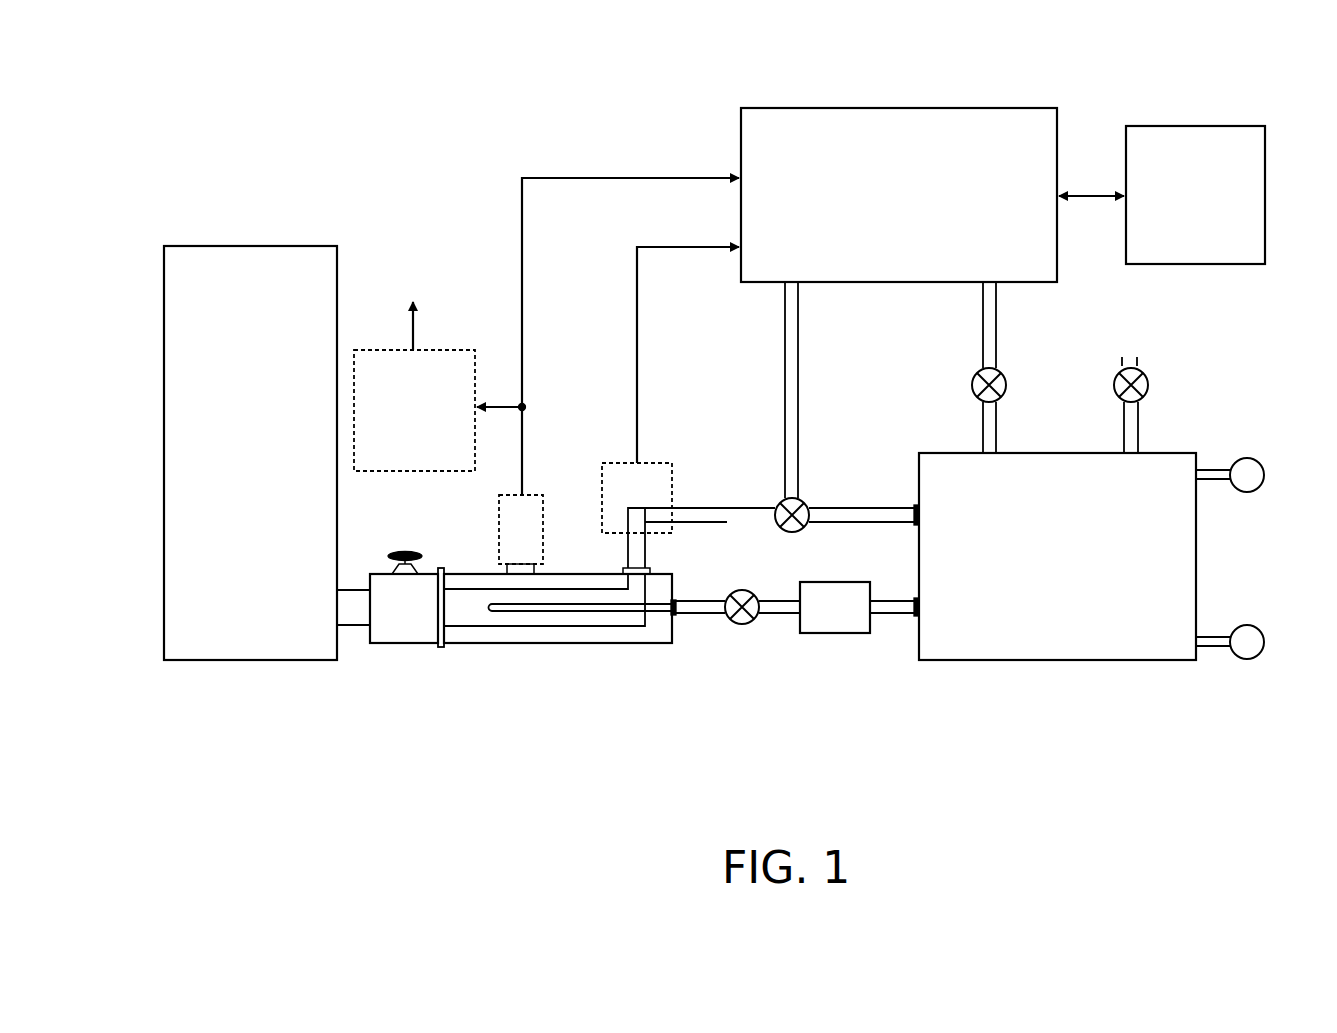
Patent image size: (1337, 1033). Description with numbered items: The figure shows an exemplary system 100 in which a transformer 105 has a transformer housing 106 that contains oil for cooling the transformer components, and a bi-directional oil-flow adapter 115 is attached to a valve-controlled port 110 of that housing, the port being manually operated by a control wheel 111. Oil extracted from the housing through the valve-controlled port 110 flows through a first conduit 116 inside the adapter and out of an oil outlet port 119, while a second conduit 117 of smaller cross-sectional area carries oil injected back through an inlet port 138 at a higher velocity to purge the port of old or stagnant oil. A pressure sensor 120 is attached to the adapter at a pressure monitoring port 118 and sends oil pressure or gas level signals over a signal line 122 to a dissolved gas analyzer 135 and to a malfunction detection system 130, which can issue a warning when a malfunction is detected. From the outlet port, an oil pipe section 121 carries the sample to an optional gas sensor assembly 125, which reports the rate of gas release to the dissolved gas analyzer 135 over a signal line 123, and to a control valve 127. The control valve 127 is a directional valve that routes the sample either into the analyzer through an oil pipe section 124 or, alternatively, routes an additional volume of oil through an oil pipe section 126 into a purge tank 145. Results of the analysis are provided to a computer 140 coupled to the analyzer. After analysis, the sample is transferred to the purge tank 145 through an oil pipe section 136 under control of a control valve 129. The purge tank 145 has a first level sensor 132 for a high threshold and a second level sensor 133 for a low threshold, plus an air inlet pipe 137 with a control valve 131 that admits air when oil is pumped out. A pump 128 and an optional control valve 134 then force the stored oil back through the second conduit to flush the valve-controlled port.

The system 100 is at (306, 110).
The transformer 105 is at (250, 453).
The transformer housing 106 is at (337, 522).
The valve-controlled port 110 is at (404, 663).
The control wheel 111 is at (405, 552).
The bi-directional oil-flow adapter 115 is at (563, 663).
The first conduit 116 is at (472, 626).
The second conduit 117 is at (492, 607).
The pressure monitoring port 118 is at (507, 571).
The oil outlet port 119 is at (623, 571).
The pressure sensor 120 is at (521, 529).
The oil pipe section 121 is at (650, 562).
The signal line 122 is at (522, 460).
The signal line 123 is at (637, 365).
The oil pipe section 124 is at (798, 438).
The gas sensor assembly 125 is at (637, 498).
The oil pipe section 126 is at (840, 505).
The control valve 127 is at (800, 532).
The pump 128 is at (797, 607).
The control valve 129 is at (972, 385).
The malfunction detection system 130 is at (414, 372).
The control valve 131 is at (1114, 385).
The first level sensor 132 is at (1247, 458).
The second level sensor 133 is at (1247, 625).
The control valve 134 is at (742, 624).
The dissolved gas analyzer 135 is at (899, 195).
The oil pipe section 136 is at (996, 335).
The air inlet pipe 137 is at (1138, 436).
The inlet port 138 is at (676, 615).
The computer 140 is at (1162, 195).
The purge tank 145 is at (1057, 556).